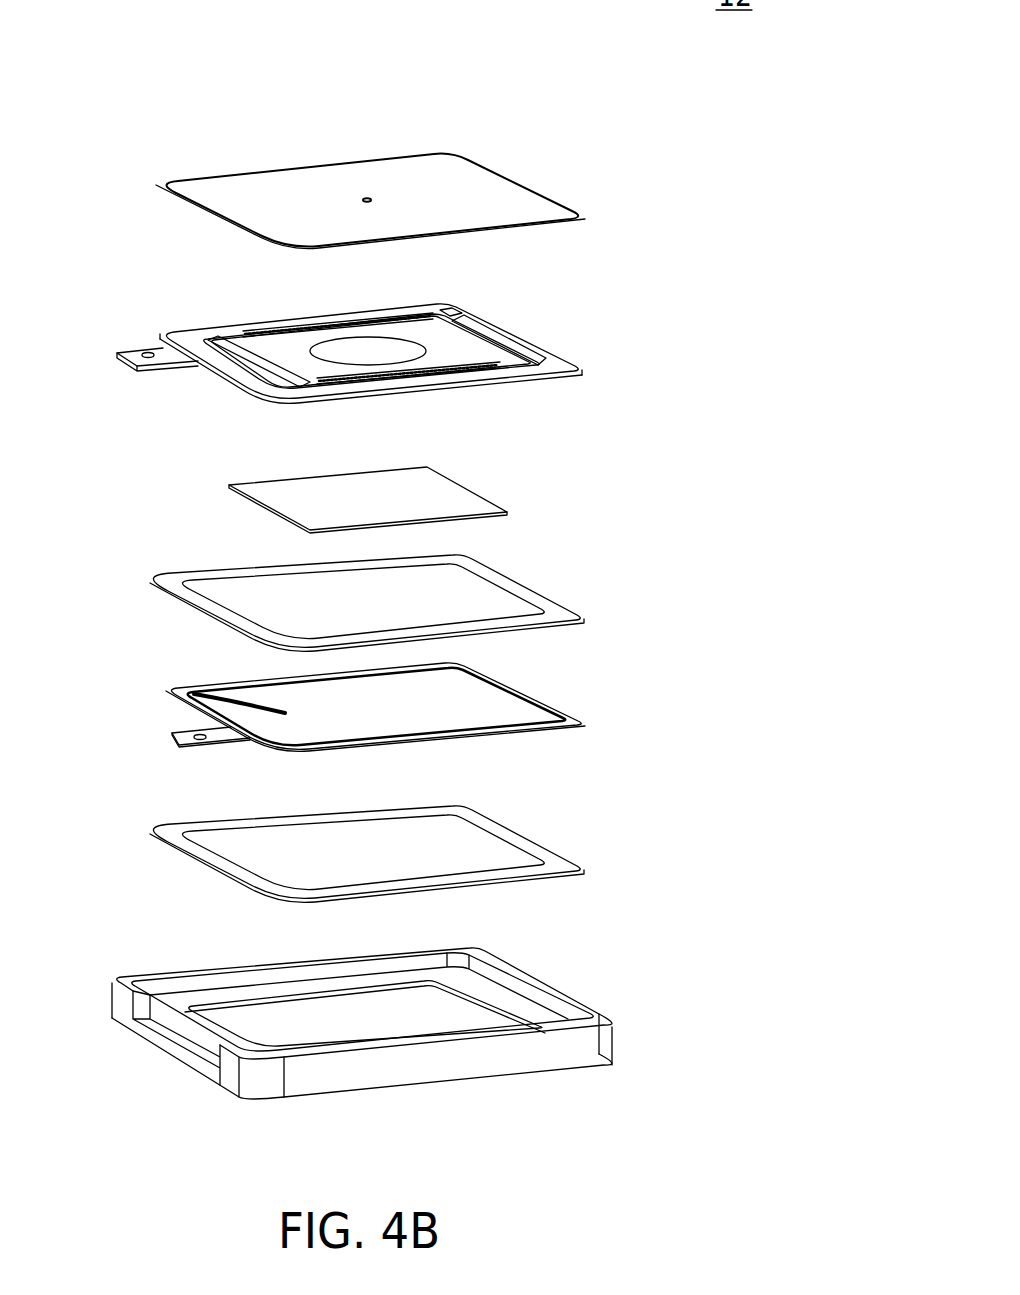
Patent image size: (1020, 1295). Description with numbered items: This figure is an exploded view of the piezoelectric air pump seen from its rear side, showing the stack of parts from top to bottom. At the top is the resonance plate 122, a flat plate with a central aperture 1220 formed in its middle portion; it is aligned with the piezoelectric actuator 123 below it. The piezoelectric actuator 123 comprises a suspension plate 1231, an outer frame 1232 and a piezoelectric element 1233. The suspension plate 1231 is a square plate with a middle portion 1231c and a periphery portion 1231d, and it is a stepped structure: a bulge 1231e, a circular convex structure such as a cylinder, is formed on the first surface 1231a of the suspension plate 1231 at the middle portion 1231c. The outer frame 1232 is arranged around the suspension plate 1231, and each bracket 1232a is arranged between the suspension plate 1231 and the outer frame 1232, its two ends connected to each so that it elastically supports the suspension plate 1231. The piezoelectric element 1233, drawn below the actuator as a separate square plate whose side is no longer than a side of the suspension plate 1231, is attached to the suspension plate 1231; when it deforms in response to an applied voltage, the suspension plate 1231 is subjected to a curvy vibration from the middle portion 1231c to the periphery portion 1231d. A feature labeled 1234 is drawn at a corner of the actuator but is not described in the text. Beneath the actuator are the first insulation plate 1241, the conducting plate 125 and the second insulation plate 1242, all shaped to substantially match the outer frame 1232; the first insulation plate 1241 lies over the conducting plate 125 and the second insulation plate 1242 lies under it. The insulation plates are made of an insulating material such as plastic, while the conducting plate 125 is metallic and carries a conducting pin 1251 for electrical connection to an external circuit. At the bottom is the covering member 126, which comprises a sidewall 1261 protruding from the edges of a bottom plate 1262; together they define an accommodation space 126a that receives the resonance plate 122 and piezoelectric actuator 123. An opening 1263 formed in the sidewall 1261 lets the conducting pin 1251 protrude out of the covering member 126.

The resonance plate 122 is at (363, 203).
The central aperture 1220 is at (360, 200).
The piezoelectric actuator 123 is at (672, 265).
The suspension plate 1231 is at (382, 354).
The first surface 1231a is at (293, 349).
The middle portion 1231c is at (365, 349).
The periphery portion 1231d is at (447, 353).
The bulge 1231e is at (345, 352).
The outer frame 1232 is at (395, 382).
The bracket 1232a is at (172, 356).
The piezoelectric element 1233 is at (443, 500).
The notch 1234 is at (496, 283).
The first insulation plate 1241 is at (557, 613).
The second insulation plate 1242 is at (557, 863).
The conducting plate 125 is at (397, 730).
The conducting pin 1251 is at (222, 736).
The covering member 126 is at (373, 1006).
The accommodation space 126a is at (342, 1014).
The sidewall 1261 is at (528, 995).
The bottom plate 1262 is at (262, 1025).
The opening 1263 is at (190, 1020).